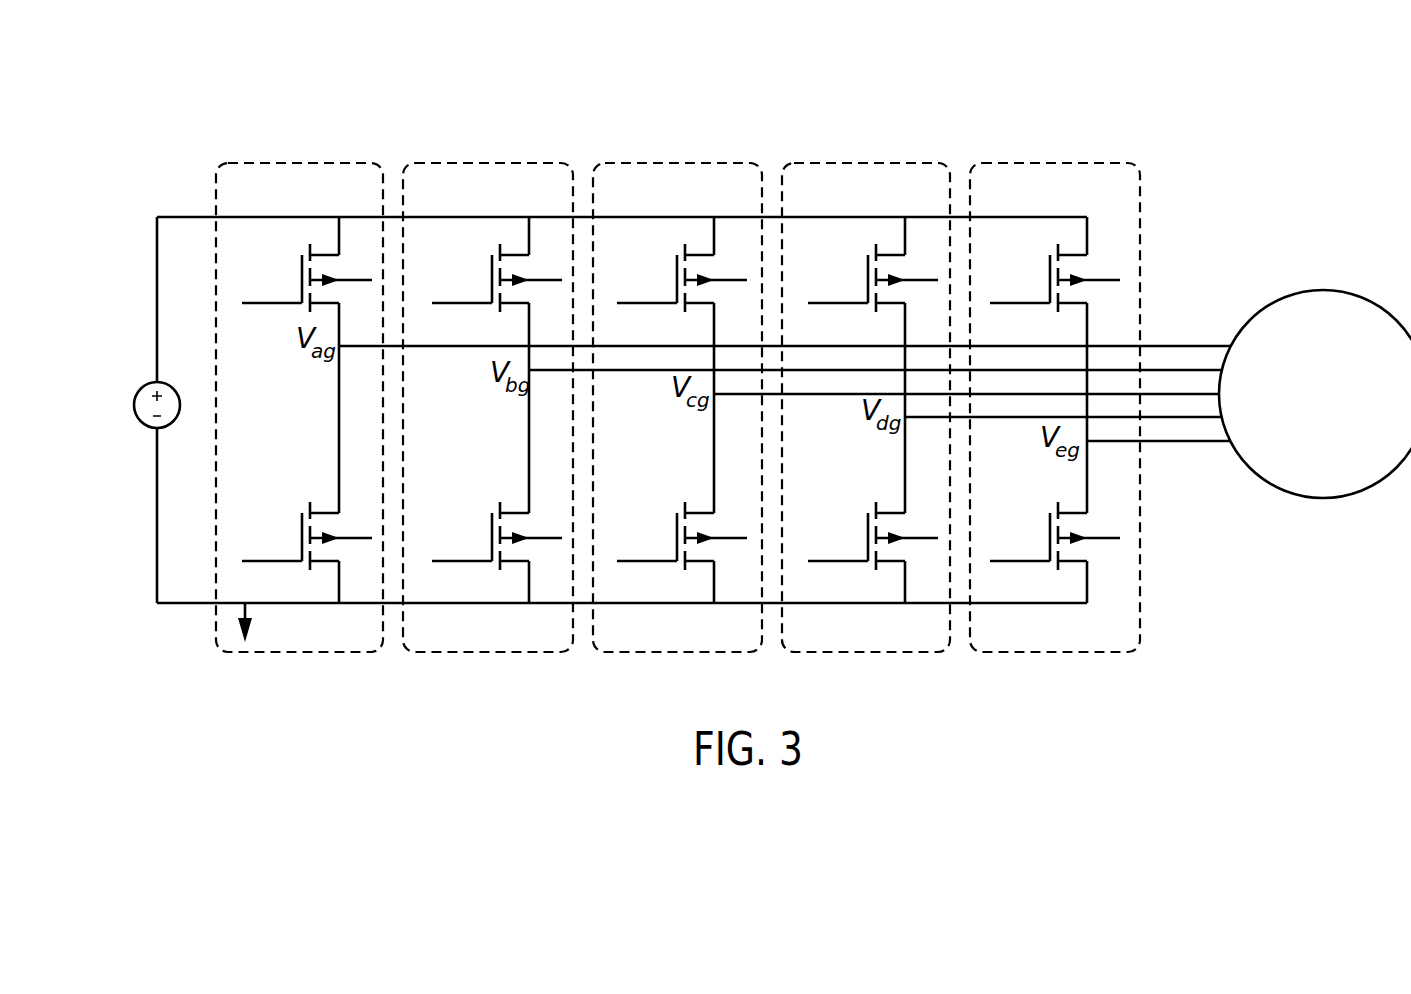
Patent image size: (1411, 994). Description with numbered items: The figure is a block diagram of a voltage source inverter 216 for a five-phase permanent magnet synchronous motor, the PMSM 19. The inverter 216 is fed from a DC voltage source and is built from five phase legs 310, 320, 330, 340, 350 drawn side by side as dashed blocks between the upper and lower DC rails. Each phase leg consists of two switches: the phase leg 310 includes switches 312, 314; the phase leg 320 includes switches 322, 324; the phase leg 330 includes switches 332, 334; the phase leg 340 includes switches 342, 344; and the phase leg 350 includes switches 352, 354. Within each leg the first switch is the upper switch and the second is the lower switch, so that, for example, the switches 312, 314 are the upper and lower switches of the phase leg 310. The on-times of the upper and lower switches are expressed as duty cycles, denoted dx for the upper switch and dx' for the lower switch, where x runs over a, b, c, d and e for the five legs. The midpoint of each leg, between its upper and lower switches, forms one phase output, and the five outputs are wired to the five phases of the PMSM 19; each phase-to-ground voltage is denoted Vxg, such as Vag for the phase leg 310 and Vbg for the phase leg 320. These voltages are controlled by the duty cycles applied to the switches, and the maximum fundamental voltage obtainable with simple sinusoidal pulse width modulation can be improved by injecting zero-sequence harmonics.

The inverter 216 is at (186, 163).
The phase leg 310 is at (305, 160).
The switch 312 is at (294, 257).
The switch 314 is at (294, 514).
The phase leg 320 is at (495, 160).
The switch 322 is at (484, 257).
The switch 324 is at (484, 514).
The phase leg 330 is at (695, 160).
The switch 332 is at (669, 257).
The switch 334 is at (669, 514).
The phase leg 340 is at (885, 160).
The switch 342 is at (860, 257).
The switch 344 is at (860, 514).
The phase leg 350 is at (1053, 160).
The switch 352 is at (1042, 257).
The switch 354 is at (1042, 514).
The PMSM 19 is at (1322, 290).